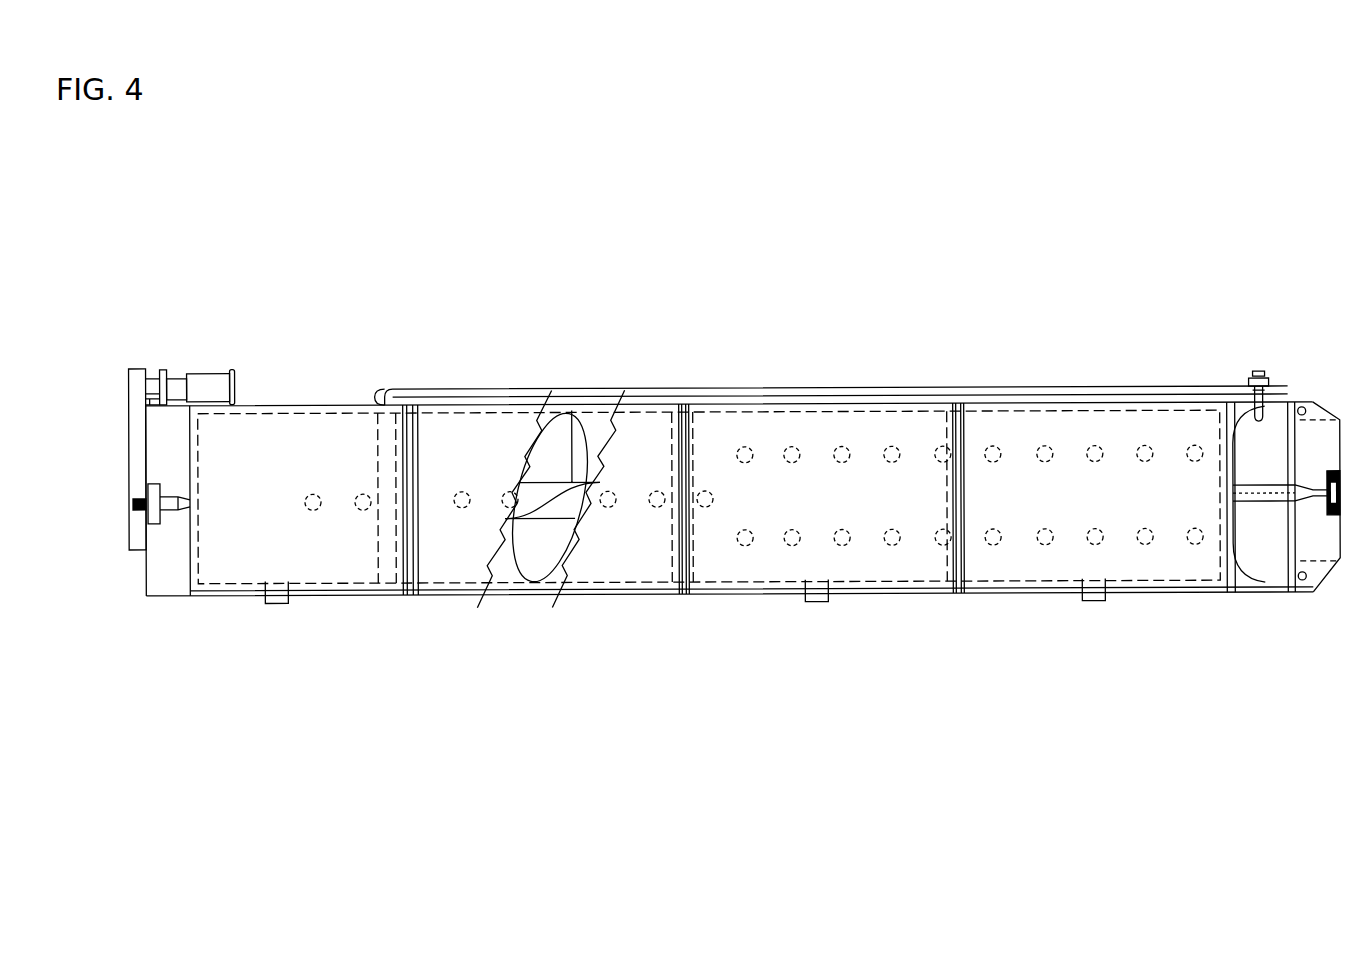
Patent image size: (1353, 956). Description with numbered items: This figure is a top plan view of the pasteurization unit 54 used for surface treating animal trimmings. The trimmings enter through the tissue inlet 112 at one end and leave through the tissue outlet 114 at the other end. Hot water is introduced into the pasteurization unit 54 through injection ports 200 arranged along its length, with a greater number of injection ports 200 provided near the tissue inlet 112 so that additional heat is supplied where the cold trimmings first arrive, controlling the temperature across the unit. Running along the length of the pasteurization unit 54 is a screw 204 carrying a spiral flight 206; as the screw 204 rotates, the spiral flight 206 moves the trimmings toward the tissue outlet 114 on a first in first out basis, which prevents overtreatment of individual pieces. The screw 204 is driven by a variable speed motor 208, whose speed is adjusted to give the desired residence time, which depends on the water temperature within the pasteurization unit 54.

The pasteurization unit 54 is at (739, 370).
The tissue inlet 112 is at (1206, 345).
The tissue outlet 114 is at (312, 367).
The injection ports 200 is at (791, 447).
The screw 204 is at (607, 412).
The spiral flight 206 is at (571, 410).
The variable speed motor 208 is at (135, 457).